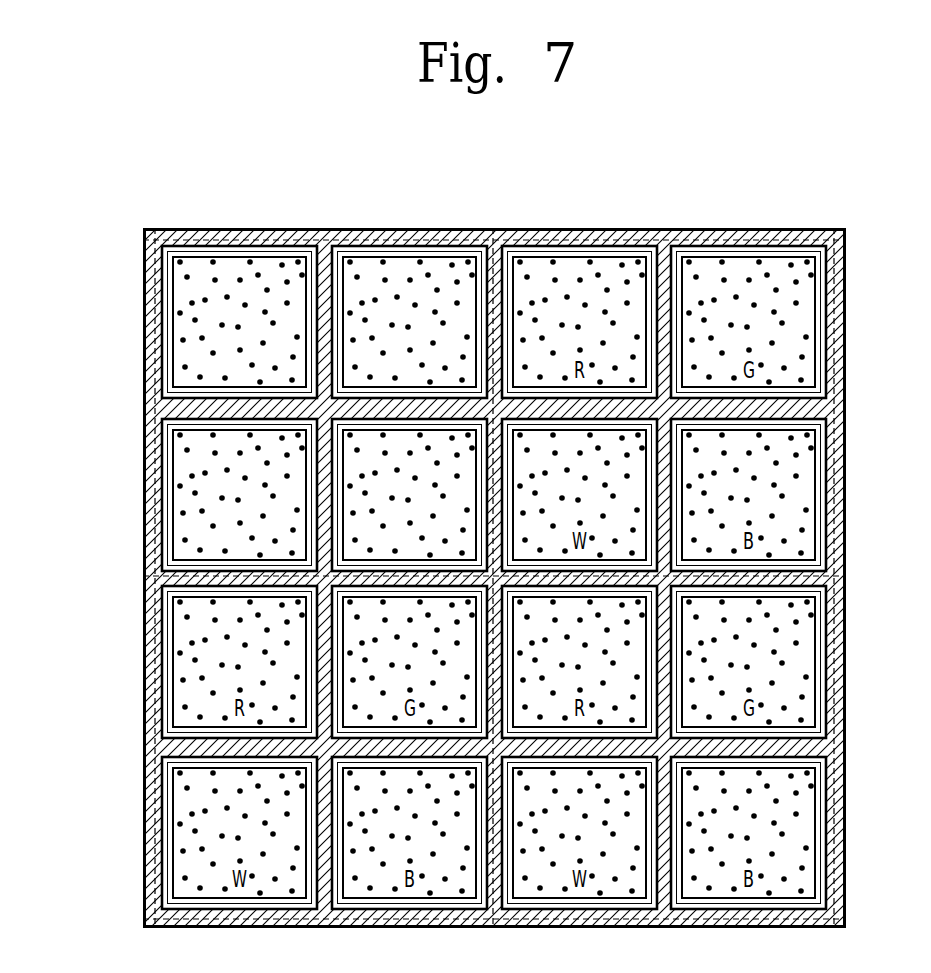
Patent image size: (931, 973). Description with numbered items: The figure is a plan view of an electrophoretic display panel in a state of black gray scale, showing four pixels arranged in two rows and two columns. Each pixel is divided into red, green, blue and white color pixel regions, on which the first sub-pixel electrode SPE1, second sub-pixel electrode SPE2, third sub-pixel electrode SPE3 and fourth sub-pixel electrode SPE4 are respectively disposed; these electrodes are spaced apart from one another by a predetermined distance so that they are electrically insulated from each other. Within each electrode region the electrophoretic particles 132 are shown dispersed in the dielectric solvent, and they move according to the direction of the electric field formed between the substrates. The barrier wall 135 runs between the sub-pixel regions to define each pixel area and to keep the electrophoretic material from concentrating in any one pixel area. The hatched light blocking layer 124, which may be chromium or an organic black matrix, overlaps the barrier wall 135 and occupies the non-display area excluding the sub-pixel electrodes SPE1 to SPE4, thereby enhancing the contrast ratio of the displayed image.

The first sub-pixel electrode SPE1 is at (188, 285).
The second sub-pixel electrode SPE2 is at (412, 253).
The third sub-pixel electrode SPE3 is at (343, 503).
The fourth sub-pixel electrode SPE4 is at (173, 457).
The light blocking layer 124 is at (320, 265).
The barrier wall 135 is at (149, 315).
The electrophoretic particles 132 is at (182, 366).